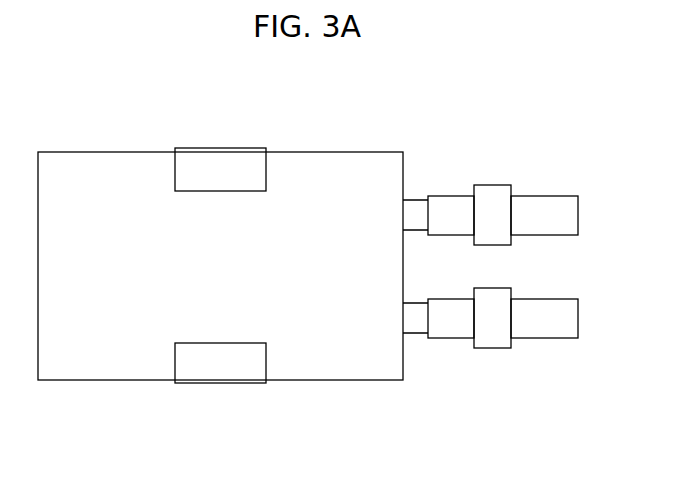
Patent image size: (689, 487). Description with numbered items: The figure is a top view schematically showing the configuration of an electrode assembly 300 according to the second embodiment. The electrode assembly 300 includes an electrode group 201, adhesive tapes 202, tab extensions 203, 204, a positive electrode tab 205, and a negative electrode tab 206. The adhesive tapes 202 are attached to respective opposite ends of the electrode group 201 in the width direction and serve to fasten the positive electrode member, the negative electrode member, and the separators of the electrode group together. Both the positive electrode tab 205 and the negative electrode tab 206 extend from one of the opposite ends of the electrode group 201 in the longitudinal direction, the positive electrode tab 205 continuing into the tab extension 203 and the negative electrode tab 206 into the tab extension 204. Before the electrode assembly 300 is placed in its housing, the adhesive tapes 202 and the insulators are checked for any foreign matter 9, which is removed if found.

The foreign matter 9 is at (115, 78).
The electrode assembly 300 is at (517, 95).
The electrode group 201 is at (325, 162).
The adhesive tapes 202 is at (220, 162).
The tab extension 203 is at (515, 180).
The tab extension 204 is at (514, 354).
The positive electrode tab 205 is at (417, 207).
The negative electrode tab 206 is at (417, 327).